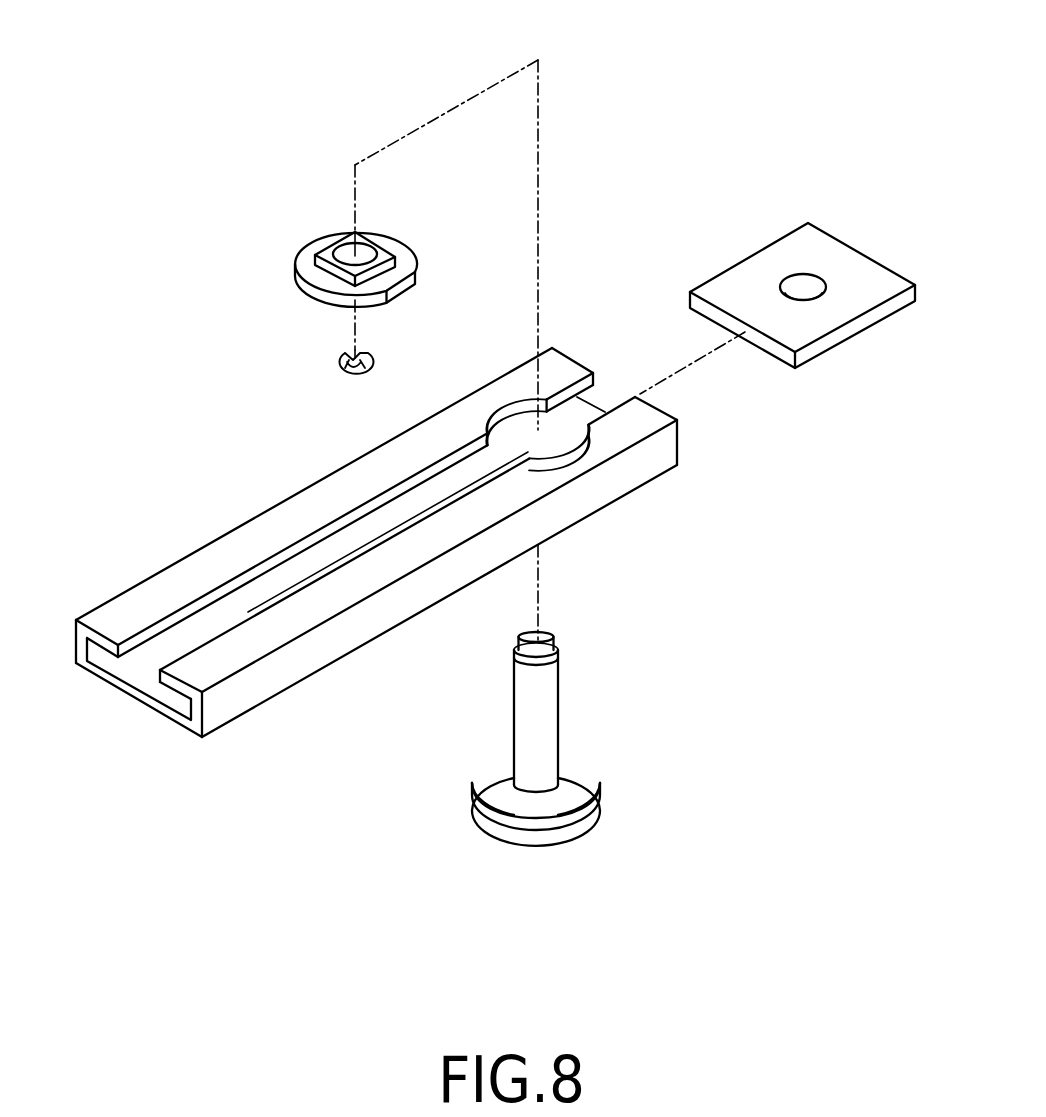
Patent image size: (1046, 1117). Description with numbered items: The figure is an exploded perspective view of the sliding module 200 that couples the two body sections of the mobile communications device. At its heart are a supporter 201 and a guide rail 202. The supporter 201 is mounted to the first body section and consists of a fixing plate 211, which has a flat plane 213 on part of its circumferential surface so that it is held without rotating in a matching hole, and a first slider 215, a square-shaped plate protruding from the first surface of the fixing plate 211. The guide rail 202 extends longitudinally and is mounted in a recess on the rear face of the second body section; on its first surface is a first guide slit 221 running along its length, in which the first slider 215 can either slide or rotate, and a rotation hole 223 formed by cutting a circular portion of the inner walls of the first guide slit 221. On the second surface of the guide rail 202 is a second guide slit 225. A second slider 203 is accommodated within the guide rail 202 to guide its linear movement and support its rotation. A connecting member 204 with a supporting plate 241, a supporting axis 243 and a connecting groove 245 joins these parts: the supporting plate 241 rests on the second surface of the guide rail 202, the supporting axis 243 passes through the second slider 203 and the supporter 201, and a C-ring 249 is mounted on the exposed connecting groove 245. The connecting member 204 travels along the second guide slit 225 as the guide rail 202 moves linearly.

The sliding module 200 is at (431, 35).
The supporter 201 is at (287, 283).
The fixing plate 211 is at (305, 260).
The plane 213 is at (392, 296).
The first slider 215 is at (328, 249).
The C-ring 249 is at (332, 364).
The guide rail 202 is at (645, 495).
The first guide slit 221 is at (158, 655).
The rotation hole 223 is at (506, 409).
The second guide slit 225 is at (582, 424).
The second slider 203 is at (743, 244).
The connecting member 204 is at (610, 778).
The supporting plate 241 is at (512, 800).
The supporting axis 243 is at (551, 714).
The connecting groove 245 is at (560, 656).